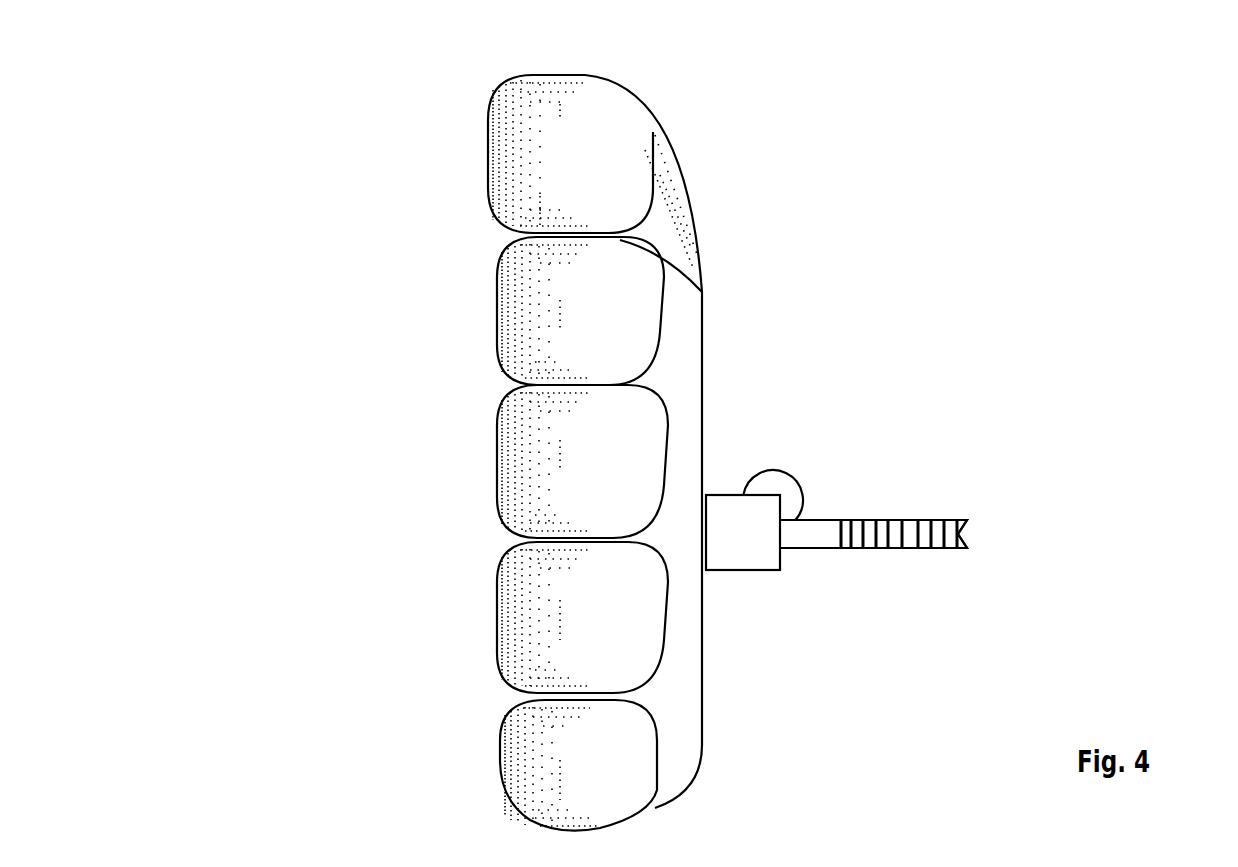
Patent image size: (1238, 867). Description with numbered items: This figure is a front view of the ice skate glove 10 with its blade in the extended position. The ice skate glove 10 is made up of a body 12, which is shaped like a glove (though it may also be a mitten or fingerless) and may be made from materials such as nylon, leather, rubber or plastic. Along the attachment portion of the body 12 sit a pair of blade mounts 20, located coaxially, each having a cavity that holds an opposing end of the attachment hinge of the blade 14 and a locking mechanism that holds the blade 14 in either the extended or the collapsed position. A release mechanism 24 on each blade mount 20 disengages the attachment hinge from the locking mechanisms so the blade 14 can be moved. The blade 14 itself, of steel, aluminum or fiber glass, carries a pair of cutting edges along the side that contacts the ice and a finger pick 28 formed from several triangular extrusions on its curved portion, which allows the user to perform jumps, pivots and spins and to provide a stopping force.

The ice skate glove 10 is at (202, 137).
The body 12 is at (460, 154).
The blade 14 is at (1004, 532).
The blade mounts 20 is at (738, 549).
The release mechanism 24 is at (803, 457).
The finger pick 28 is at (904, 570).